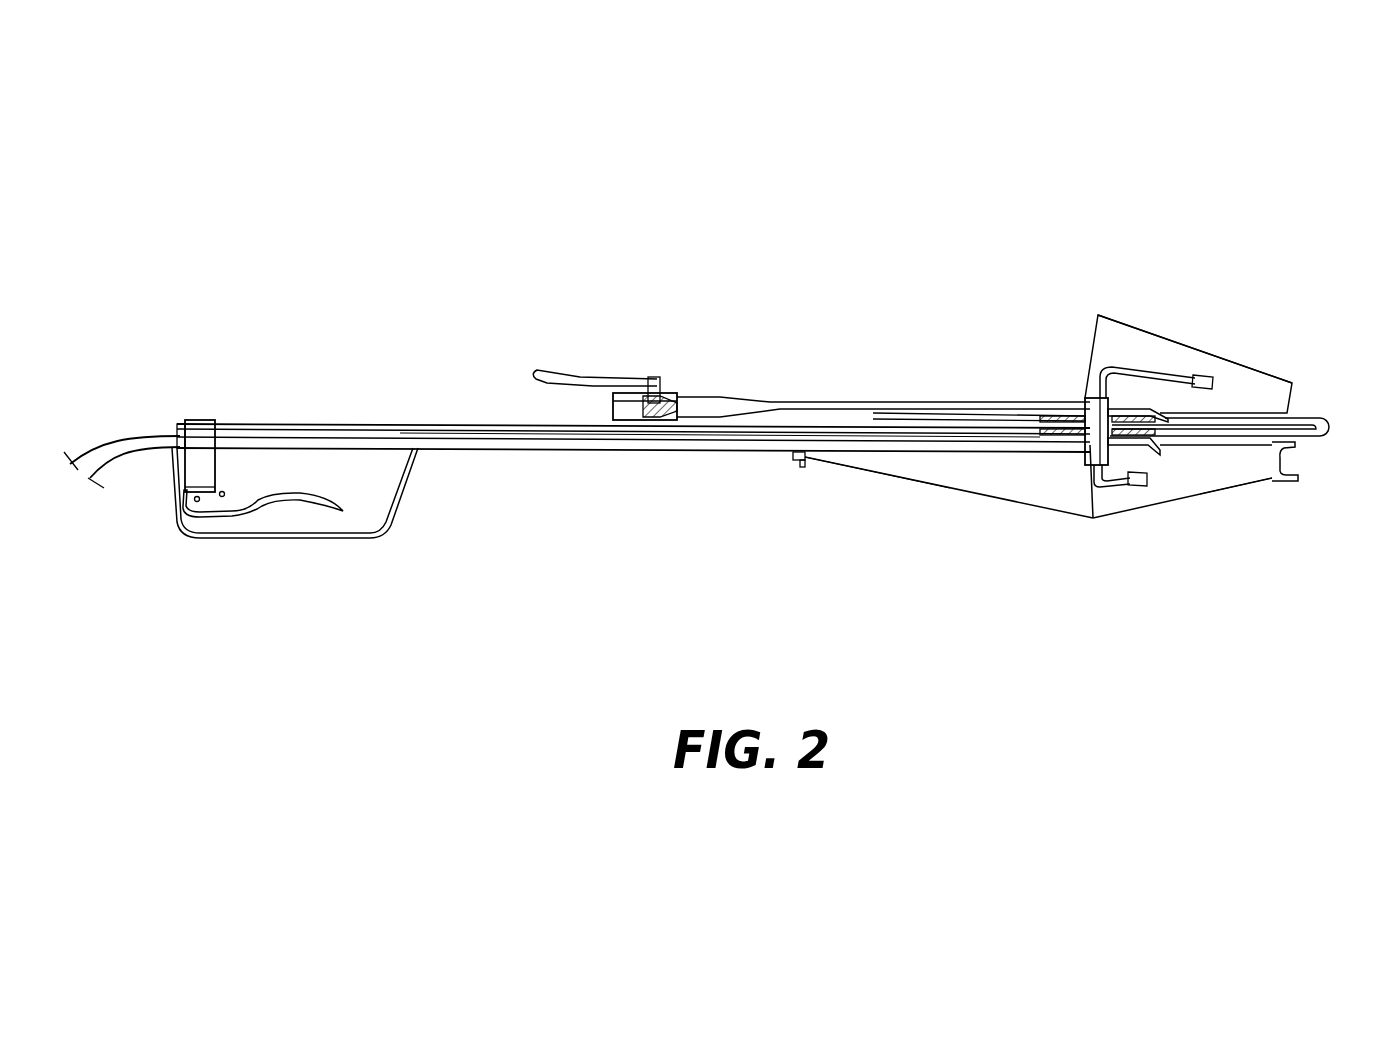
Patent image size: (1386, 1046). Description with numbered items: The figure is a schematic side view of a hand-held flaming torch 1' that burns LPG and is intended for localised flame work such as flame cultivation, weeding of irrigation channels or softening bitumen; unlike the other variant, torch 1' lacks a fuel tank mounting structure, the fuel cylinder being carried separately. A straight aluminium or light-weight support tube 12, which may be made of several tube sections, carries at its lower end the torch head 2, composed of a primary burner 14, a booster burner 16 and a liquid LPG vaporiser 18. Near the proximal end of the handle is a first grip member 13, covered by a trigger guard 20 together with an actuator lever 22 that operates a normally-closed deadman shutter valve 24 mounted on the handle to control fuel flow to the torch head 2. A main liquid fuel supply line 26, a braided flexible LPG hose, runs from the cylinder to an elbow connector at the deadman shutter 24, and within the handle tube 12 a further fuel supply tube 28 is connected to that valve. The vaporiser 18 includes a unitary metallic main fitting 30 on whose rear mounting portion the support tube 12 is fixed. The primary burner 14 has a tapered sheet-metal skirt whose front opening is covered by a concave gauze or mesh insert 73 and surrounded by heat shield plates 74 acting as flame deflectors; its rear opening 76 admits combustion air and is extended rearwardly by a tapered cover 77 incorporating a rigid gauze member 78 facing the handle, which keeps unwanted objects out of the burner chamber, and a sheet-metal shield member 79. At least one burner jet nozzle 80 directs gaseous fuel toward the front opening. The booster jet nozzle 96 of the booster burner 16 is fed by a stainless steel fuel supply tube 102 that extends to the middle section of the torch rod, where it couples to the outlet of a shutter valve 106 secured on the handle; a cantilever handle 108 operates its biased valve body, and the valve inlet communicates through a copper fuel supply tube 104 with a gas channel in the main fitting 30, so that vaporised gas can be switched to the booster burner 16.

The hand-held flaming torch 1' is at (633, 496).
The torch head 2 is at (1067, 373).
The support tube 12 is at (582, 449).
The first grip member 13 is at (337, 425).
The primary burner 14 is at (1187, 504).
The booster burner 16 is at (1185, 327).
The liquid LPG vaporiser 18 is at (1210, 413).
The trigger guard 20 is at (393, 517).
The actuator lever 22 is at (287, 502).
The deadman shutter valve 24 is at (215, 420).
The main liquid fuel supply line 26 is at (118, 432).
The fuel supply tube 28 is at (632, 435).
The main fitting 30 is at (1085, 456).
The gauze or mesh insert 73 is at (1293, 460).
The heat shield plates 74 is at (1277, 476).
The rear opening 76 is at (1087, 460).
The tapered-shaped cover 77 is at (917, 500).
The rigid gauze or mesh member 78 is at (886, 448).
The sheet-metal shield member 79 is at (963, 493).
The burner jet nozzle 80 is at (1137, 486).
The booster jet nozzle 96 is at (1210, 377).
The fuel supply tube 102 is at (788, 403).
The copper fuel supply tube 104 is at (873, 412).
The shutter valve 106 is at (683, 375).
The cantilever handle 108 is at (590, 372).